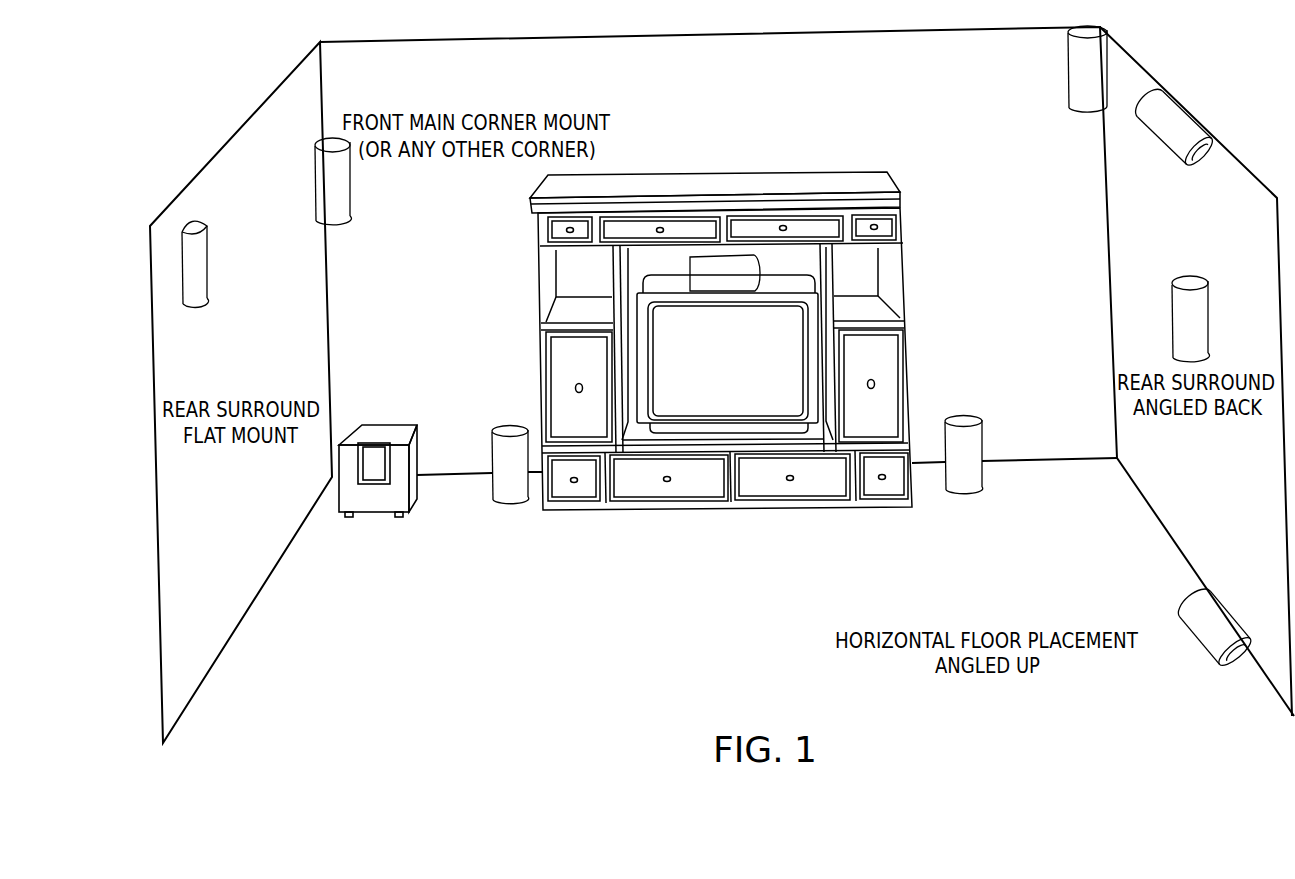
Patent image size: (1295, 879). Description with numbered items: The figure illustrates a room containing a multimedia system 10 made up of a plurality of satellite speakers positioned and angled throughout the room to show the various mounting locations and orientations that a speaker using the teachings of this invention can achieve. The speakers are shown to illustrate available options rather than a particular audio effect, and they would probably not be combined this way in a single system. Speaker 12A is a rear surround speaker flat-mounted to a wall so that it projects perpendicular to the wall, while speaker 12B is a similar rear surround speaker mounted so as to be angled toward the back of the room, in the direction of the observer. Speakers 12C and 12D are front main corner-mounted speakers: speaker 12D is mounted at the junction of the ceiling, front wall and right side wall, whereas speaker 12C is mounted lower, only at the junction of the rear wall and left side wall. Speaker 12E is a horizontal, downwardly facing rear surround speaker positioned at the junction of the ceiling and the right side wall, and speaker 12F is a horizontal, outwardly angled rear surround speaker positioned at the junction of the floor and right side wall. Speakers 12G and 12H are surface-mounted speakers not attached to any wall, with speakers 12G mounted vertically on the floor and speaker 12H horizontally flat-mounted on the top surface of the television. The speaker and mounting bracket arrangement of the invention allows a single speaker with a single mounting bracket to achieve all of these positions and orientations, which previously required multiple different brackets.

The multimedia system 10 is at (649, 116).
The rear surround speaker 12A is at (225, 352).
The rear surround speaker 12B is at (1177, 325).
The front main corner-mounted speaker 12C is at (348, 211).
The front main corner-mounted speaker 12D is at (1088, 67).
The rear surround speaker 12E is at (1167, 133).
The rear surround speaker 12F is at (1202, 633).
The surface-mounted speakers 12G is at (494, 462).
The surface-mounted speaker 12H is at (706, 268).